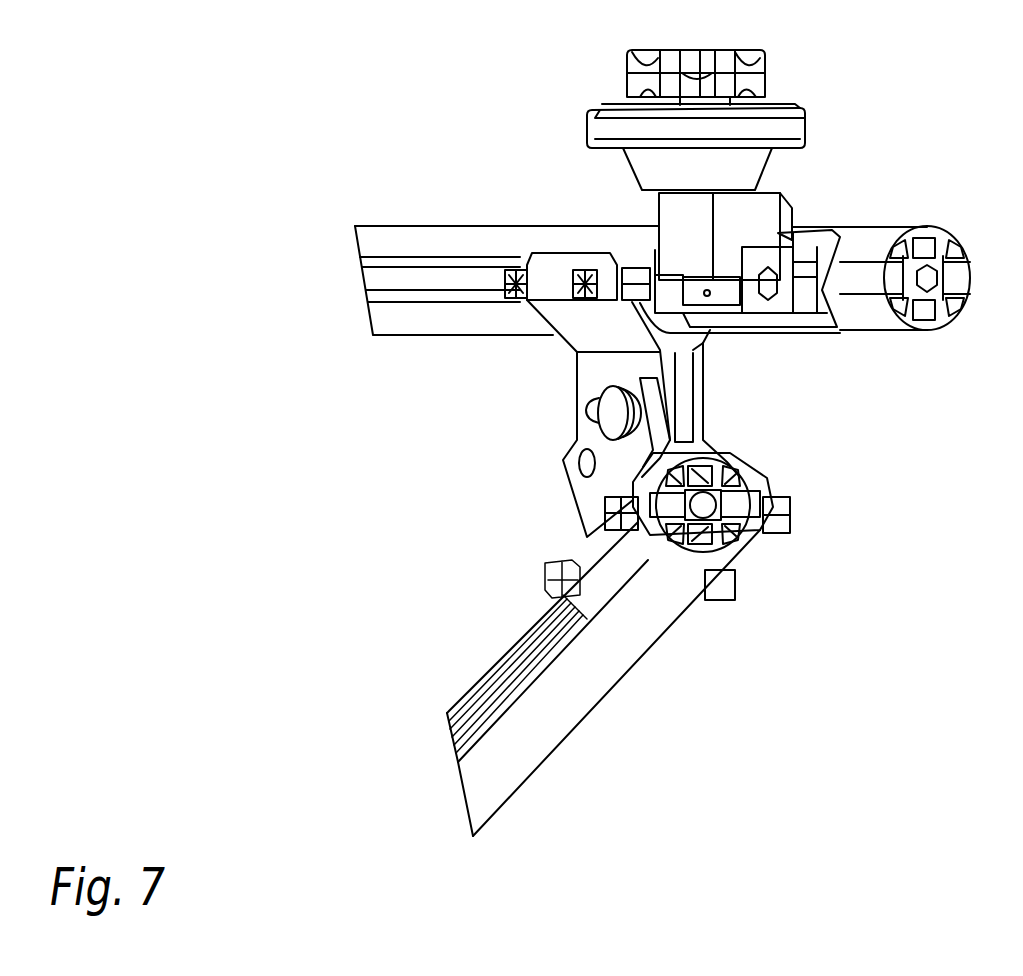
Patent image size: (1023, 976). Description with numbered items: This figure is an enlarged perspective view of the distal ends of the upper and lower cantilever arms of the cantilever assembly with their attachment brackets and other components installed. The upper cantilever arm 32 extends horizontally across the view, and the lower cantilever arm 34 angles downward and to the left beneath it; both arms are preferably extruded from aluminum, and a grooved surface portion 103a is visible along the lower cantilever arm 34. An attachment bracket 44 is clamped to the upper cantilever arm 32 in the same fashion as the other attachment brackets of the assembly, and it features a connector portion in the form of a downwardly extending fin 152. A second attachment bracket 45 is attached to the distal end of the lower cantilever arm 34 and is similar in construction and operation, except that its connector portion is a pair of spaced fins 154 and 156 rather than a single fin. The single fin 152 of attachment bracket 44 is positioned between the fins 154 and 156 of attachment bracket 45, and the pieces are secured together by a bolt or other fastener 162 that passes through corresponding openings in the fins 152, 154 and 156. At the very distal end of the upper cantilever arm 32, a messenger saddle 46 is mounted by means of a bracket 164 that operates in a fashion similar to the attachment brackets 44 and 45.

The upper cantilever arm 32 is at (463, 223).
The lower cantilever arm 34 is at (593, 690).
The attachment bracket 44 is at (578, 333).
The attachment bracket 45 is at (757, 465).
The messenger saddle 46 is at (800, 110).
The grooved blade portion 103a is at (488, 690).
The fin 152 is at (680, 385).
The fin 154 is at (575, 492).
The fin 156 is at (730, 437).
The fastener 162 is at (612, 413).
The bracket 164 is at (820, 240).